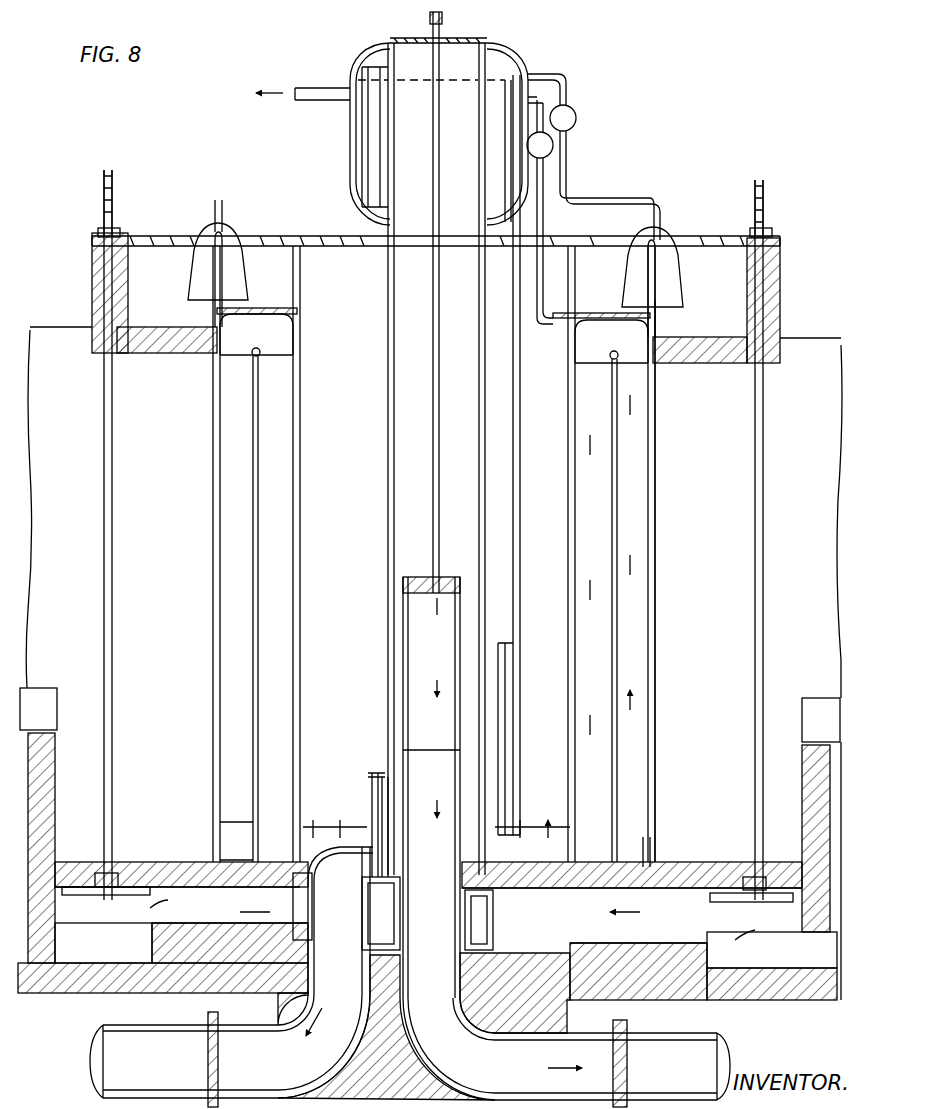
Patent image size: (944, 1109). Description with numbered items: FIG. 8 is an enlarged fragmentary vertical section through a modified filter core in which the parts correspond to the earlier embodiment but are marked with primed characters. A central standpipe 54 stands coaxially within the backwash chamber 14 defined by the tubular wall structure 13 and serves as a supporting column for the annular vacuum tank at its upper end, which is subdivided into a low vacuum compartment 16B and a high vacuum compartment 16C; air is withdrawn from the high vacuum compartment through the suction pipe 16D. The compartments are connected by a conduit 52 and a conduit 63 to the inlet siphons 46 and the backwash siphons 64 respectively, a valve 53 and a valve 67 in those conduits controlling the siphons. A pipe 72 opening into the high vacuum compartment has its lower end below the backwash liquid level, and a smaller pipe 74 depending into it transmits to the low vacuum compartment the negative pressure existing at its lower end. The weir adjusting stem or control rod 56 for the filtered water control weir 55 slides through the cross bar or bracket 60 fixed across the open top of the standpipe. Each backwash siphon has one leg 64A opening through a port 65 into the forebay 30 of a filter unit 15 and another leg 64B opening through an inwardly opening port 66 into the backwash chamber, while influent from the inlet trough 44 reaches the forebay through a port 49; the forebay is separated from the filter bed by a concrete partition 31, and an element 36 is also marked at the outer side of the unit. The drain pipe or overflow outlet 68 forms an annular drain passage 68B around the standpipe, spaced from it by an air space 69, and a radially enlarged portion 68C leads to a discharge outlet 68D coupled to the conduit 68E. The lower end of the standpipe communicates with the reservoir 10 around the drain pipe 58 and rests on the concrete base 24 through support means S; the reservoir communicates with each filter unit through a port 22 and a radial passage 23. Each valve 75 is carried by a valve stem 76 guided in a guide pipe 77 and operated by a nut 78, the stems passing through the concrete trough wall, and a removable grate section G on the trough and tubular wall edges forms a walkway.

The removable grate section G is at (182, 236).
The inlet trough 44 is at (143, 255).
The low vacuum compartment 16B is at (505, 62).
The cross bar or bracket 60 is at (402, 40).
The high vacuum compartment 16C is at (362, 152).
The suction pipe 16D is at (325, 90).
The standpipe 54 is at (388, 536).
The weir adjusting stem or control rod 56 is at (433, 465).
The filtered water control weir 55 is at (403, 614).
The pipe 72 is at (521, 432).
The pipe 74 is at (505, 118).
The conduit 52 is at (568, 86).
The valve 53 is at (577, 118).
The valve 67 is at (553, 145).
The conduit 63 is at (543, 222).
The inlet siphon 46 is at (236, 235).
The tubular wall structure 13 is at (213, 500).
The backwash siphon 64 is at (658, 440).
The siphon leg 64B is at (568, 548).
The siphon leg 64A is at (612, 522).
The port 49 is at (237, 822).
The guide pipe 77 is at (112, 676).
The valve stem 76 is at (104, 180).
The nut 78 is at (102, 228).
The valve 75 is at (125, 888).
The filter unit 15 is at (27, 680).
The footing block 36 is at (47, 688).
The partition 31 is at (55, 755).
The forebay 30 is at (428, 820).
The backwash chamber 14 is at (436, 760).
The inwardly opening port 66 is at (303, 827).
The port 65 is at (650, 830).
The drain pipe 58 is at (390, 760).
The air space 69 is at (392, 783).
The drain pipe or overflow outlet 68 is at (372, 795).
The annular drain passage 68B is at (398, 813).
The radially enlarged portion 68C is at (340, 850).
The discharge outlet 68D is at (312, 905).
The conduit 68E is at (230, 1051).
The support means S is at (392, 935).
The reservoir 10 is at (428, 915).
The radial passage 23 is at (826, 960).
The port 22 is at (452, 923).
The concrete base 24 is at (568, 1003).